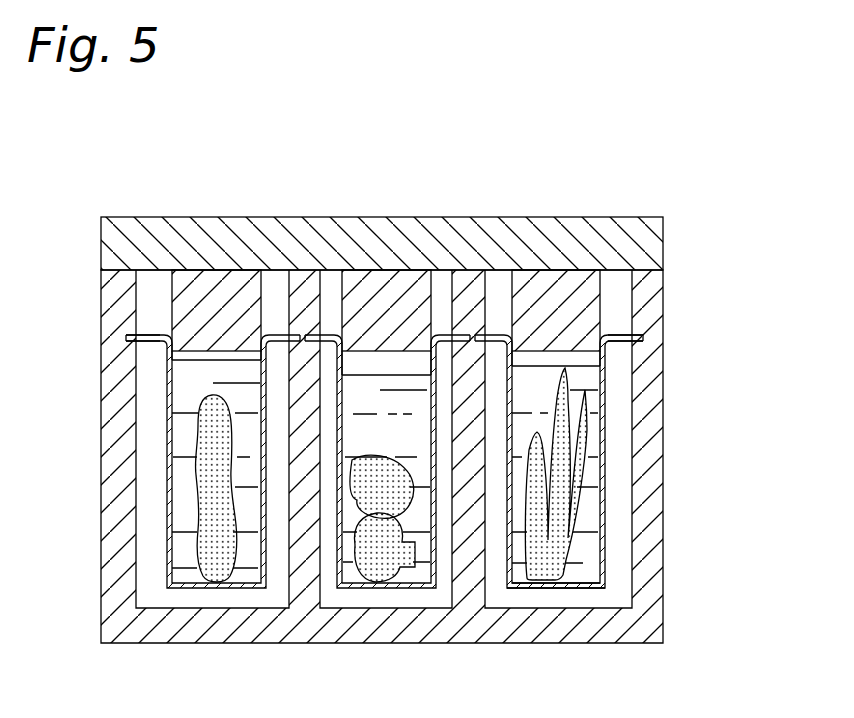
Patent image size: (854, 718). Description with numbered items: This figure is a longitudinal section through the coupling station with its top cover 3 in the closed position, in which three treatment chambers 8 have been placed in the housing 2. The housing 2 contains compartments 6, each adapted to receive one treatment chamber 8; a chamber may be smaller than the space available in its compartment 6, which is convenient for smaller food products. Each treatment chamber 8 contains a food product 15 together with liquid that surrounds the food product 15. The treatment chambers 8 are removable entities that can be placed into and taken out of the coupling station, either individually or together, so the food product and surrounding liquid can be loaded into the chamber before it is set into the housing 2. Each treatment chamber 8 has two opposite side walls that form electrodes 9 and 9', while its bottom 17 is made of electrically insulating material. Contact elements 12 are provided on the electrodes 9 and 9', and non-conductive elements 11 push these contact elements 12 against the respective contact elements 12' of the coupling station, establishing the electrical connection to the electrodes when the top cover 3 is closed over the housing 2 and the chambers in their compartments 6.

The housing 2 is at (445, 625).
The top cover 3 is at (648, 250).
The compartment 6 is at (158, 397).
The treatment chamber 8 is at (410, 403).
The electrode 9 is at (386, 338).
The electrode 9' is at (386, 338).
The non-conductive element 11 is at (223, 288).
The contact element 12 is at (384, 345).
The contact element 12' is at (384, 304).
The food product 15 is at (218, 432).
The bottom 17 is at (583, 588).